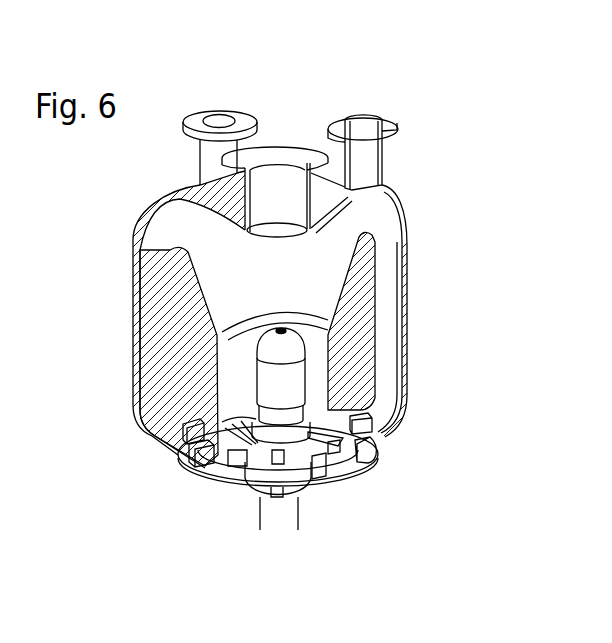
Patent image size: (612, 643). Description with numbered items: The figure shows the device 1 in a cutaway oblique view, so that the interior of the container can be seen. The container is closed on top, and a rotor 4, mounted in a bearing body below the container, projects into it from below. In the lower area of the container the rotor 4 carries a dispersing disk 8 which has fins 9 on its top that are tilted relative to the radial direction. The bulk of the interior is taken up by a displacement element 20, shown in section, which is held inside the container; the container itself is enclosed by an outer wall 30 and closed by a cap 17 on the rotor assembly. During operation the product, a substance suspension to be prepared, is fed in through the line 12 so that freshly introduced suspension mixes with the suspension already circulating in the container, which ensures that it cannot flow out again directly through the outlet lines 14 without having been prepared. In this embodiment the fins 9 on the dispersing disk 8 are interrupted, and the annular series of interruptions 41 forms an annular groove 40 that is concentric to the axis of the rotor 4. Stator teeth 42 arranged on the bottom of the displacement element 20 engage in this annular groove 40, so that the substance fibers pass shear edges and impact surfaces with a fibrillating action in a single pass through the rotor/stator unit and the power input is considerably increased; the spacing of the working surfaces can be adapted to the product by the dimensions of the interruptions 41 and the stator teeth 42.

The device 1 is at (446, 198).
The rotor 4 is at (317, 393).
The dispersing disk 8 is at (223, 479).
The fins 9 is at (363, 452).
The line 12 is at (281, 162).
The outlet lines 14 is at (224, 119).
The cap 17 is at (285, 358).
The displacement element 20 is at (178, 366).
The outer wall 30 is at (393, 286).
The annular groove 40 is at (232, 470).
The interruptions 41 is at (348, 446).
The stator teeth 42 is at (340, 426).